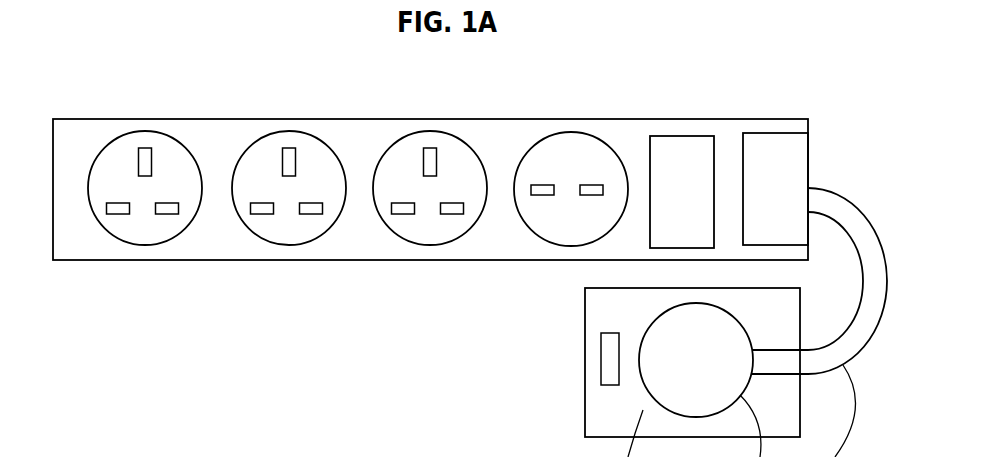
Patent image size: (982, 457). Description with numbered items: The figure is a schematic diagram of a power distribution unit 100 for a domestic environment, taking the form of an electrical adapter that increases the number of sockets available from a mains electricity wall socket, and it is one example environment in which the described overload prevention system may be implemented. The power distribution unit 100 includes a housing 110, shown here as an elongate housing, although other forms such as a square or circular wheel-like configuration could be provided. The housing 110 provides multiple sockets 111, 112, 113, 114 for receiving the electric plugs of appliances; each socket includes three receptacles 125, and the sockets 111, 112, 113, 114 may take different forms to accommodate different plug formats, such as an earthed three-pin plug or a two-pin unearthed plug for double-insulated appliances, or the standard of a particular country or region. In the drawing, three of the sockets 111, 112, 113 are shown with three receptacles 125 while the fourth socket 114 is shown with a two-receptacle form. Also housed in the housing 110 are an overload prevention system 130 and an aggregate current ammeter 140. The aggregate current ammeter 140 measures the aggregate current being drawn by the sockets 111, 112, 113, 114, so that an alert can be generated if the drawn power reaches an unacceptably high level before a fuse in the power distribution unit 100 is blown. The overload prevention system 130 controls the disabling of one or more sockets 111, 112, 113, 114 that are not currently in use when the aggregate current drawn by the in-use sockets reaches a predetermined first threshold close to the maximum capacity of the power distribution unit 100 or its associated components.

The power distribution unit 100 is at (89, 95).
The housing 110 is at (257, 260).
The socket 111 is at (133, 209).
The socket 112 is at (335, 157).
The socket 113 is at (475, 150).
The socket 114 is at (610, 148).
The receptacle 125 is at (118, 211).
The overload prevention system 130 is at (713, 137).
The aggregate current ammeter 140 is at (783, 135).